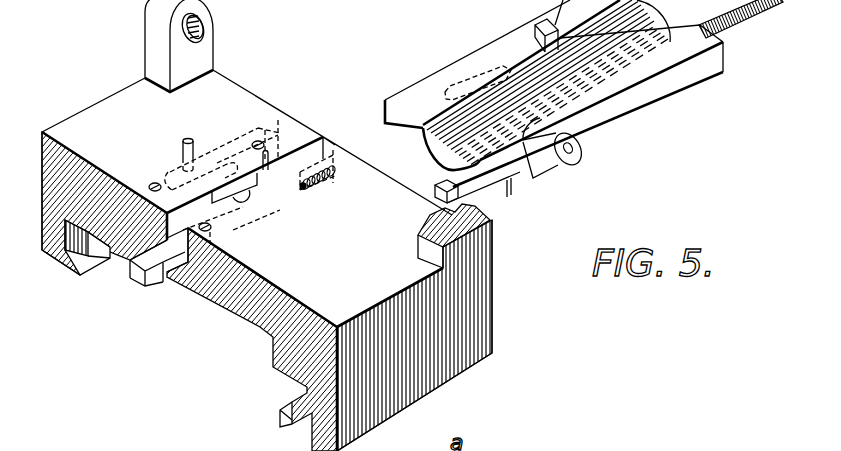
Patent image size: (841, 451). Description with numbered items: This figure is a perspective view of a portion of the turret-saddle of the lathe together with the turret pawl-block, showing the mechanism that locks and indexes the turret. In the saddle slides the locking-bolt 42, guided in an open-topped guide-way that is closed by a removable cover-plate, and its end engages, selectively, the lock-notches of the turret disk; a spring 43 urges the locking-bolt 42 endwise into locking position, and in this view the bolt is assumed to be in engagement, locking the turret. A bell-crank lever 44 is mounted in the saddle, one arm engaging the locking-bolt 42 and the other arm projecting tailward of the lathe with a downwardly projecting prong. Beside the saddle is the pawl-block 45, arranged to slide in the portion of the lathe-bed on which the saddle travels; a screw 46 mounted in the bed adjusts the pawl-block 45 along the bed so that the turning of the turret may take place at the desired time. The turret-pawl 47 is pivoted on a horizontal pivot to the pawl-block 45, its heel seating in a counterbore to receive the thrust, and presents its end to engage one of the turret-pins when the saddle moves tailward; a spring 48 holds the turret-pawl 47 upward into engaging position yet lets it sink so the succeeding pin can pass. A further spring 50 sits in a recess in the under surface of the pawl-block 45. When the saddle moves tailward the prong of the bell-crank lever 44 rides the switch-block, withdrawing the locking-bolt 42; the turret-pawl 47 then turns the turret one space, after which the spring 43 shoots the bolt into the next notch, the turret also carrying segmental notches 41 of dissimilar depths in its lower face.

The segmental notches 41 is at (477, 328).
The locking-bolt 42 is at (157, 283).
The spring 43 is at (332, 195).
The bell-crank lever 44 is at (217, 165).
The pawl-block 45 is at (632, 117).
The screw 46 is at (738, 25).
The turret-pawl 47 is at (490, 190).
The spring 48 is at (562, 167).
The spring 50 is at (487, 77).